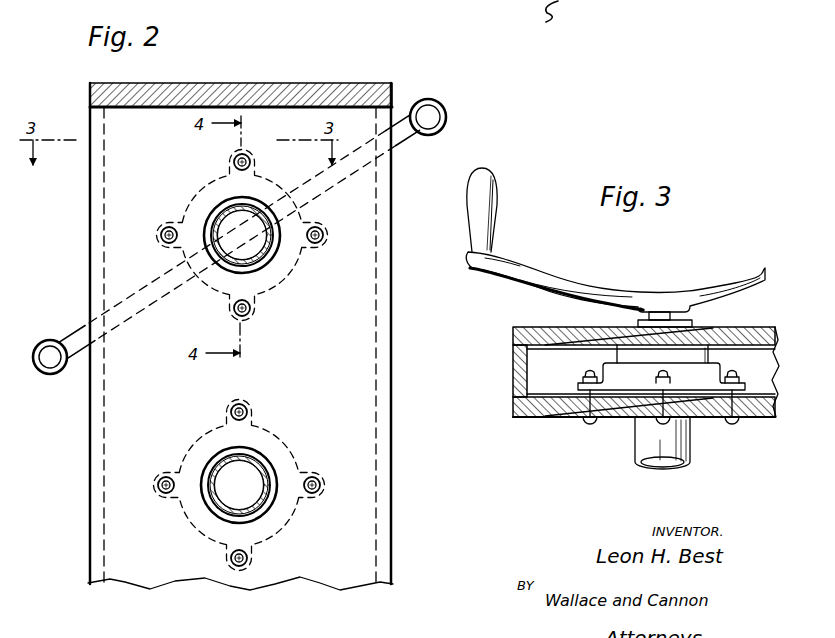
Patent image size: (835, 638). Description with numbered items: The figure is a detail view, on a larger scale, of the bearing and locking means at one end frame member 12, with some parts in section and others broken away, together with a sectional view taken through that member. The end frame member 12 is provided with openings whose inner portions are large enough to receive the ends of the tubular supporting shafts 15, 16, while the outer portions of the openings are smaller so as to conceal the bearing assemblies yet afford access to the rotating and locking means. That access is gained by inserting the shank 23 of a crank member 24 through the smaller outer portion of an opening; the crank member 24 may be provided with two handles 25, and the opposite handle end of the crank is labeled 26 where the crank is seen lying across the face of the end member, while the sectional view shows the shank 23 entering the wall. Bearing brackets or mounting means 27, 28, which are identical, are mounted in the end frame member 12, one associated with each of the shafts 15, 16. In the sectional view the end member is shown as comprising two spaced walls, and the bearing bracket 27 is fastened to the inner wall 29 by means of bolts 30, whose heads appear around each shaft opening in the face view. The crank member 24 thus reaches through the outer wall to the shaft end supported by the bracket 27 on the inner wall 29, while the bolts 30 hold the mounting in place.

In FIG. 2, the end frame member 12 is at (382, 377).
In FIG. 2, the tubular supporting shaft 15 is at (268, 258).
In FIG. 3, the tubular supporting shaft 15 is at (690, 446).
In FIG. 2, the tubular supporting shaft 16 is at (263, 509).
In FIG. 3, the shank 23 is at (686, 321).
In FIG. 2, the crank member 24 is at (158, 298).
In FIG. 3, the crank member 24 is at (612, 285).
In FIG. 2, the handle 25 is at (447, 112).
In FIG. 3, the handle 25 is at (496, 210).
In FIG. 2, the handle knob 26 is at (46, 374).
In FIG. 2, the bearing bracket 27 is at (275, 178).
In FIG. 3, the bearing bracket 27 is at (722, 372).
In FIG. 2, the bearing bracket 28 is at (283, 440).
In FIG. 3, the bearing bracket 28 is at (548, 327).
In FIG. 3, the inner wall 29 is at (537, 419).
In FIG. 2, the bolt 30 is at (233, 159).
In FIG. 3, the bolt 30 is at (590, 425).